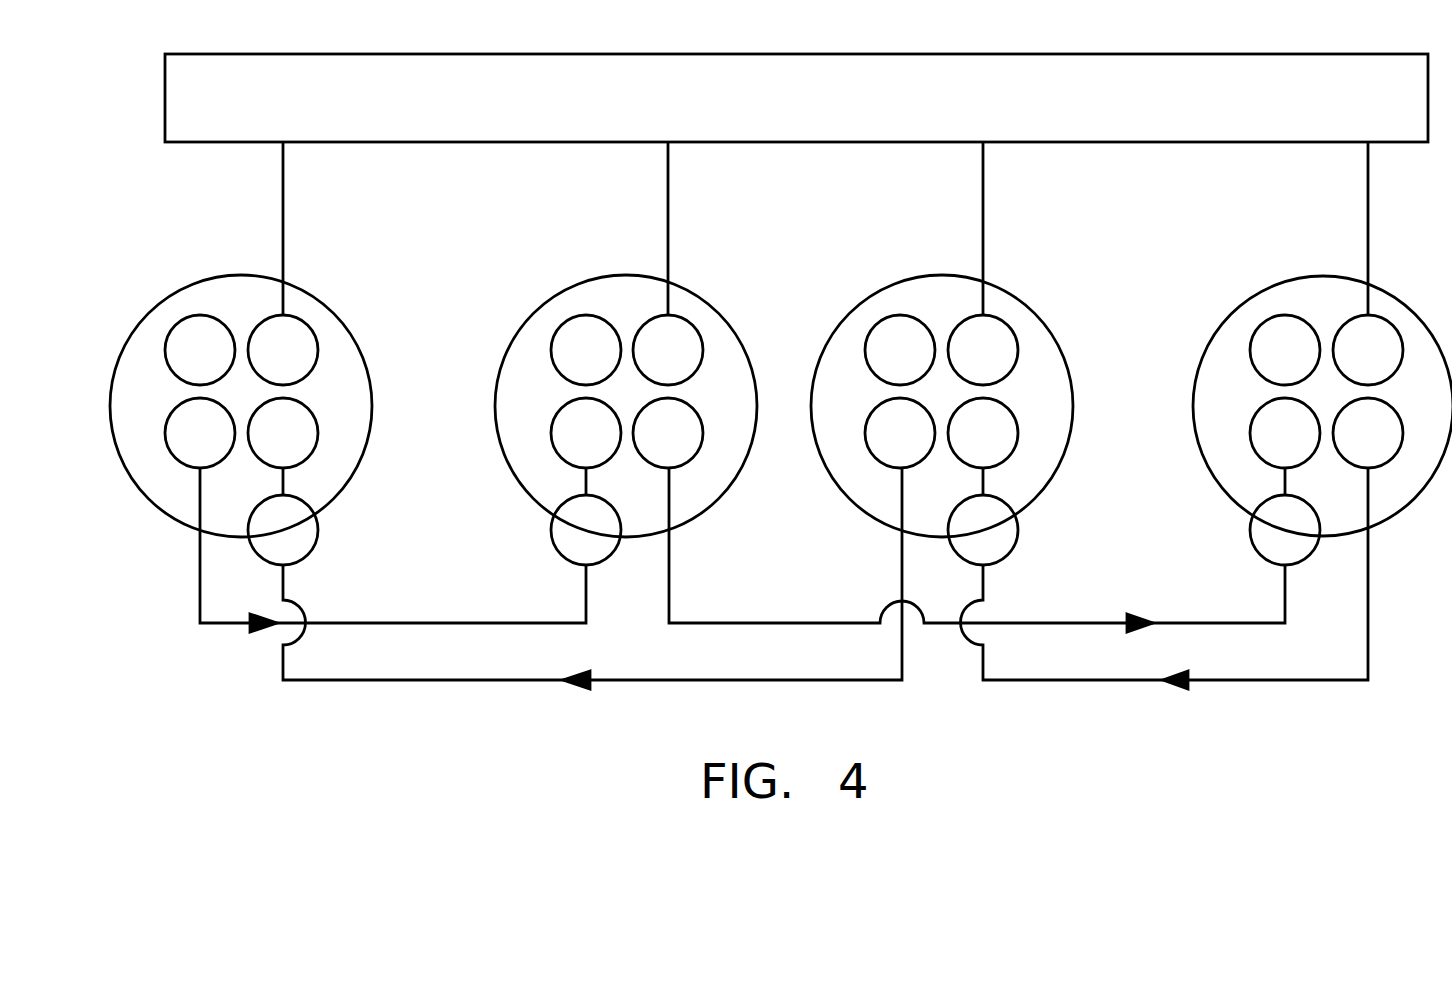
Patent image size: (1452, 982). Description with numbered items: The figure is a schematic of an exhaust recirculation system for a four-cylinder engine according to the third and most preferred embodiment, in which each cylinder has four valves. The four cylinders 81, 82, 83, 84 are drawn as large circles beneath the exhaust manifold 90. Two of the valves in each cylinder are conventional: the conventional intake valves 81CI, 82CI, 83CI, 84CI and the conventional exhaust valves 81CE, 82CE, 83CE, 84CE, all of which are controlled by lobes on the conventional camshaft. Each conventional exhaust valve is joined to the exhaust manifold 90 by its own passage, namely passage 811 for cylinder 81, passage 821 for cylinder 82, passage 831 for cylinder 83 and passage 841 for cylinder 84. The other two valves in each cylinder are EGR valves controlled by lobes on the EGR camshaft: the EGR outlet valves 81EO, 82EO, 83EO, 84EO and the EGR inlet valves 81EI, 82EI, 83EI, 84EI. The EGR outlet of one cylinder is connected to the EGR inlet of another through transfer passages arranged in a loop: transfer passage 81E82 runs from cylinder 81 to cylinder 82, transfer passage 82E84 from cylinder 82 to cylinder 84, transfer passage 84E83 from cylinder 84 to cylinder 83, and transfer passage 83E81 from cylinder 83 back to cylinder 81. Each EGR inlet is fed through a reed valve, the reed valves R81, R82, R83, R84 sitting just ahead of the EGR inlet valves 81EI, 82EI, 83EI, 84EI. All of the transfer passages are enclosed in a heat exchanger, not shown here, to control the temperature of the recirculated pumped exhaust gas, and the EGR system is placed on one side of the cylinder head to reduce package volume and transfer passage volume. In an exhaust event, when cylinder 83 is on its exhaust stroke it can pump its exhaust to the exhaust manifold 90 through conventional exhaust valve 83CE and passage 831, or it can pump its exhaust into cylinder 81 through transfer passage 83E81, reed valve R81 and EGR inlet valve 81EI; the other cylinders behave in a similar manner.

The exhaust manifold 90 is at (796, 98).
The passage 811 is at (283, 212).
The passage 821 is at (668, 212).
The passage 831 is at (983, 212).
The passage 841 is at (1368, 212).
The cylinder 81 is at (241, 406).
The cylinder 82 is at (626, 406).
The cylinder 83 is at (942, 406).
The cylinder 84 is at (1322, 406).
The conventional intake valve 81CI is at (222, 365).
The conventional exhaust valve 81CE is at (305, 365).
The EGR outlet valve 81EO is at (222, 448).
The EGR inlet valve 81EI is at (305, 448).
The conventional intake valve 82CI is at (608, 365).
The conventional exhaust valve 82CE is at (690, 365).
The EGR inlet valve 82EI is at (608, 448).
The EGR outlet valve 82EO is at (690, 448).
The conventional intake valve 83CI is at (922, 365).
The conventional exhaust valve 83CE is at (1005, 365).
The EGR outlet valve 83EO is at (922, 448).
The EGR inlet valve 83EI is at (1005, 448).
The conventional intake valve 84CI is at (1307, 365).
The conventional exhaust valve 84CE is at (1390, 365).
The EGR inlet valve 84EI is at (1307, 448).
The EGR outlet valve 84EO is at (1390, 448).
The reed valve R81 is at (310, 516).
The reed valve R82 is at (559, 516).
The reed valve R83 is at (1008, 516).
The reed valve R84 is at (1258, 516).
The transfer passage 81E82 is at (357, 621).
The transfer passage 82E84 is at (723, 622).
The transfer passage 83E81 is at (607, 678).
The transfer passage 84E83 is at (1037, 678).